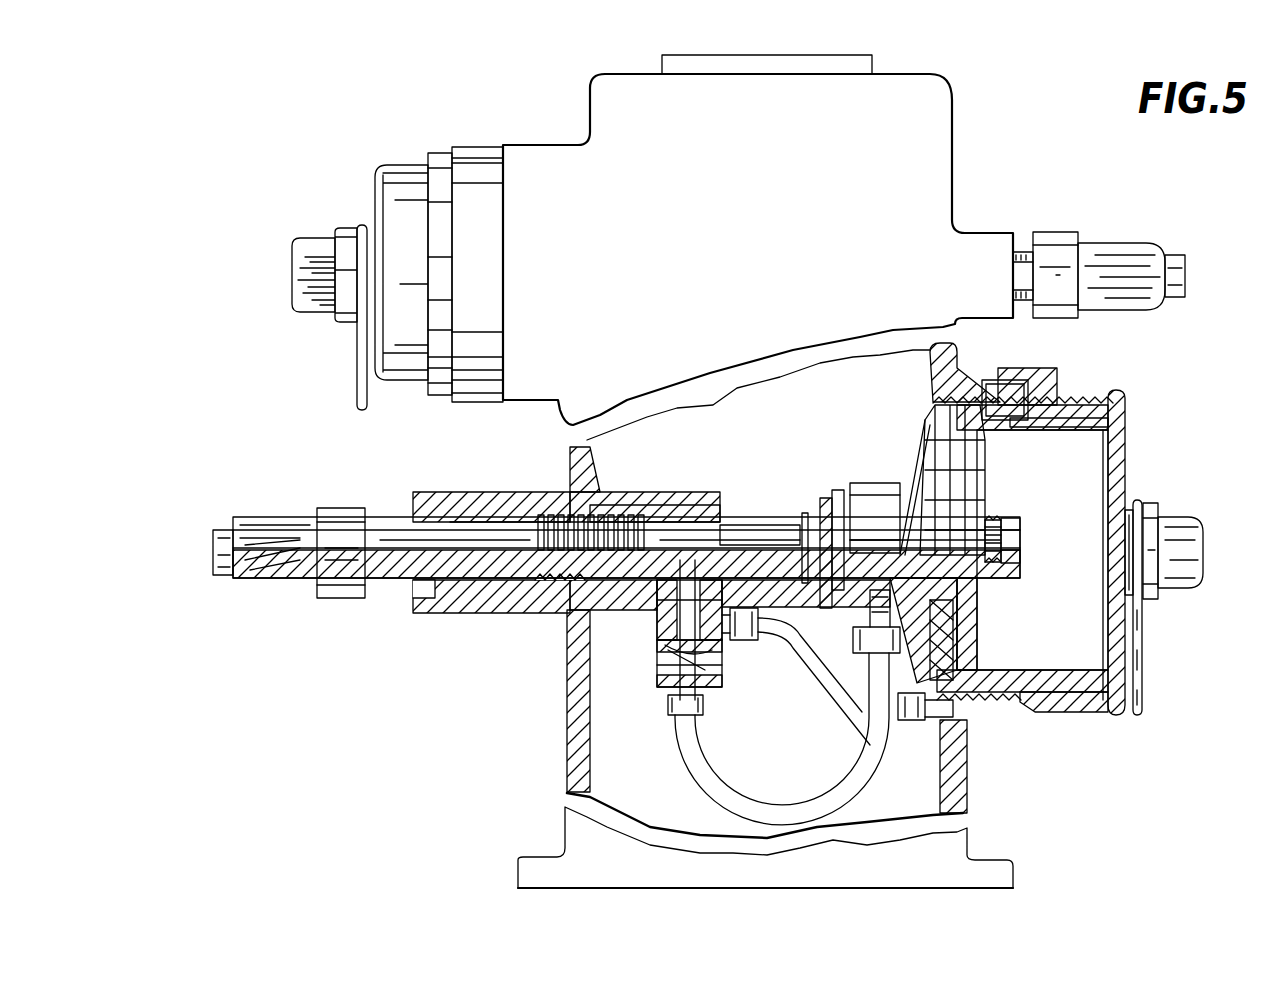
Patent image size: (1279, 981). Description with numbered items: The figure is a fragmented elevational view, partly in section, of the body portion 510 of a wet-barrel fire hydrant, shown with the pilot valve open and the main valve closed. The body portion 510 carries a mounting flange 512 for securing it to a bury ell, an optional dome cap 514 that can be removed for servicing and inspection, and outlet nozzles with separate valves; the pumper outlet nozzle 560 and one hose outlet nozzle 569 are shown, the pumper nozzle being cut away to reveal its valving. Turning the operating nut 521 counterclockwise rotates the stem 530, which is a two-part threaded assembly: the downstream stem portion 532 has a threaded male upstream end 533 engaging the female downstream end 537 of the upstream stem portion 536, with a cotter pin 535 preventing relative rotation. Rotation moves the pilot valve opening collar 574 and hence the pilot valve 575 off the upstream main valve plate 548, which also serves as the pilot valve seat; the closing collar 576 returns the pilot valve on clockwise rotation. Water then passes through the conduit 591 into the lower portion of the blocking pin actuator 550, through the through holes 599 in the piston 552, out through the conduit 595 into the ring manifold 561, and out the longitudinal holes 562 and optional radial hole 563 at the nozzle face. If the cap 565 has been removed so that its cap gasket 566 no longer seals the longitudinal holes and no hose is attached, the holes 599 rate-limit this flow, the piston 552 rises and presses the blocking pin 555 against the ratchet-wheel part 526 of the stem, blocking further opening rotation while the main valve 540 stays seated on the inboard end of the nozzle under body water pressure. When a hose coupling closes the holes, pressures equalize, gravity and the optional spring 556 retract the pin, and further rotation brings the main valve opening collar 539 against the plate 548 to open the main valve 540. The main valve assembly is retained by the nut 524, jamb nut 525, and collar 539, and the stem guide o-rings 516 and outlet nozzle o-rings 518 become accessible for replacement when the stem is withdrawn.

The body portion 510 is at (952, 160).
The mounting flange 512 is at (1000, 858).
The dome cap 514 is at (826, 62).
The stem guide o-rings 516 is at (692, 590).
The outlet nozzle o-rings 518 is at (1012, 368).
The operating nut 521 is at (288, 517).
The nut 524 is at (1000, 520).
The jamb nut 525 is at (1012, 518).
The ratchet wheel part of stem 526 is at (690, 508).
The stem 530 is at (400, 515).
The downstream stem portion 532 is at (1022, 565).
The threaded male upstream end 533 is at (758, 525).
The cotter pin 535 is at (808, 515).
The upstream stem portion 536 is at (807, 582).
The downstream end of upstream stem portion 537 is at (853, 578).
The main valve opening collar 539 is at (995, 598).
The main valve 540 is at (935, 430).
The upstream main valve plate 548 is at (915, 475).
The blocking pin actuator 550 is at (686, 631).
The piston 552 is at (662, 680).
The blocking pin 555 is at (728, 605).
The spring 556 is at (662, 632).
The pumper outlet nozzle 560 is at (1032, 720).
The ring manifold 561 is at (1015, 725).
The longitudinal holes 562 is at (1090, 385).
The radial hole 563 is at (1085, 710).
The cap 565 is at (1125, 405).
The cap gasket 566 is at (1122, 455).
The hose outlet nozzle 569 is at (486, 145).
The pilot valve opening collar 574 is at (870, 575).
The pilot valve 575 is at (826, 498).
The closing collar 576 is at (838, 492).
The conduit 591 is at (787, 805).
The conduit 595 is at (872, 705).
The through holes 599 is at (712, 670).